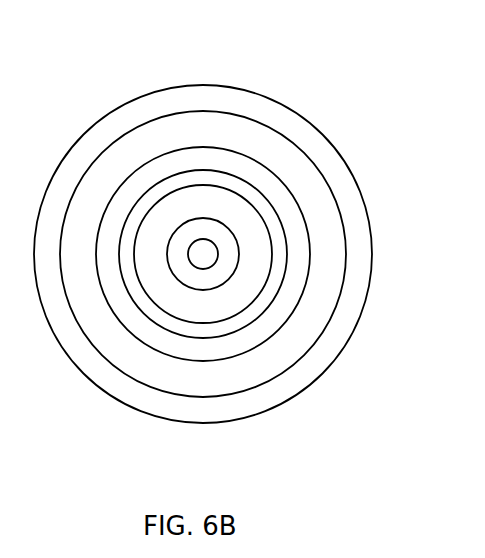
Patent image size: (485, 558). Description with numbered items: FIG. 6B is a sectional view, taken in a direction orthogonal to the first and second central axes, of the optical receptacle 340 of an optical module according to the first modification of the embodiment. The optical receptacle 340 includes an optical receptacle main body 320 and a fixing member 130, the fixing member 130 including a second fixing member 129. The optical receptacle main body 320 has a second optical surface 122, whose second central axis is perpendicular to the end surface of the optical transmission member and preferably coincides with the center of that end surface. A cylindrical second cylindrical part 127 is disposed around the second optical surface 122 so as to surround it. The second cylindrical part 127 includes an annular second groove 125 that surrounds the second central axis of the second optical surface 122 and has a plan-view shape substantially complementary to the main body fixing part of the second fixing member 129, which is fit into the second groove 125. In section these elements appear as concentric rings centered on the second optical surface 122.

The optical receptacle main body 320 is at (68, 353).
The second cylindrical part 127 is at (148, 280).
The fixing member 130 is at (203, 176).
The second fixing member 129 is at (195, 180).
The second groove 125 is at (270, 235).
The second optical surface 122 is at (203, 252).
The optical receptacle 340 is at (397, 47).